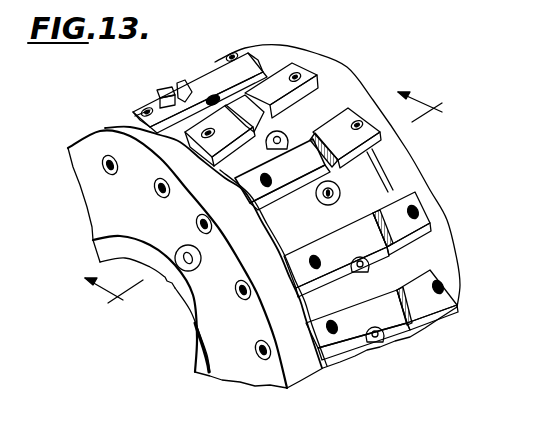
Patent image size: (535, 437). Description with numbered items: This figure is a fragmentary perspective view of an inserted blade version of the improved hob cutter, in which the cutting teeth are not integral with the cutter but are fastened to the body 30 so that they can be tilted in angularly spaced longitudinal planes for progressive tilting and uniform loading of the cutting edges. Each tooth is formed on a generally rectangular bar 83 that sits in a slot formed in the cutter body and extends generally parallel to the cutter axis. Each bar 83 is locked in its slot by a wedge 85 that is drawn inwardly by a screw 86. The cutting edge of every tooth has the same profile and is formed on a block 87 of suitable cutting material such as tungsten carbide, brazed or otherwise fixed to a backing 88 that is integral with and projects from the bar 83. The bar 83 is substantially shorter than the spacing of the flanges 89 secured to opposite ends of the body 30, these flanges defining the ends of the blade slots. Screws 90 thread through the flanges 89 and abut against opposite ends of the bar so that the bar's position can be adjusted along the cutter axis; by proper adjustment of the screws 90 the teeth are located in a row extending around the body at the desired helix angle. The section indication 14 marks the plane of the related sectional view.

The body 30 is at (305, 366).
The bar 83 is at (210, 73).
The wedge 85 is at (339, 185).
The screw 86 is at (325, 201).
The block 87 is at (188, 84).
The backing 88 is at (164, 91).
The flange 89 is at (240, 370).
The screw 90 is at (199, 223).
The section line 14 is at (272, 214).